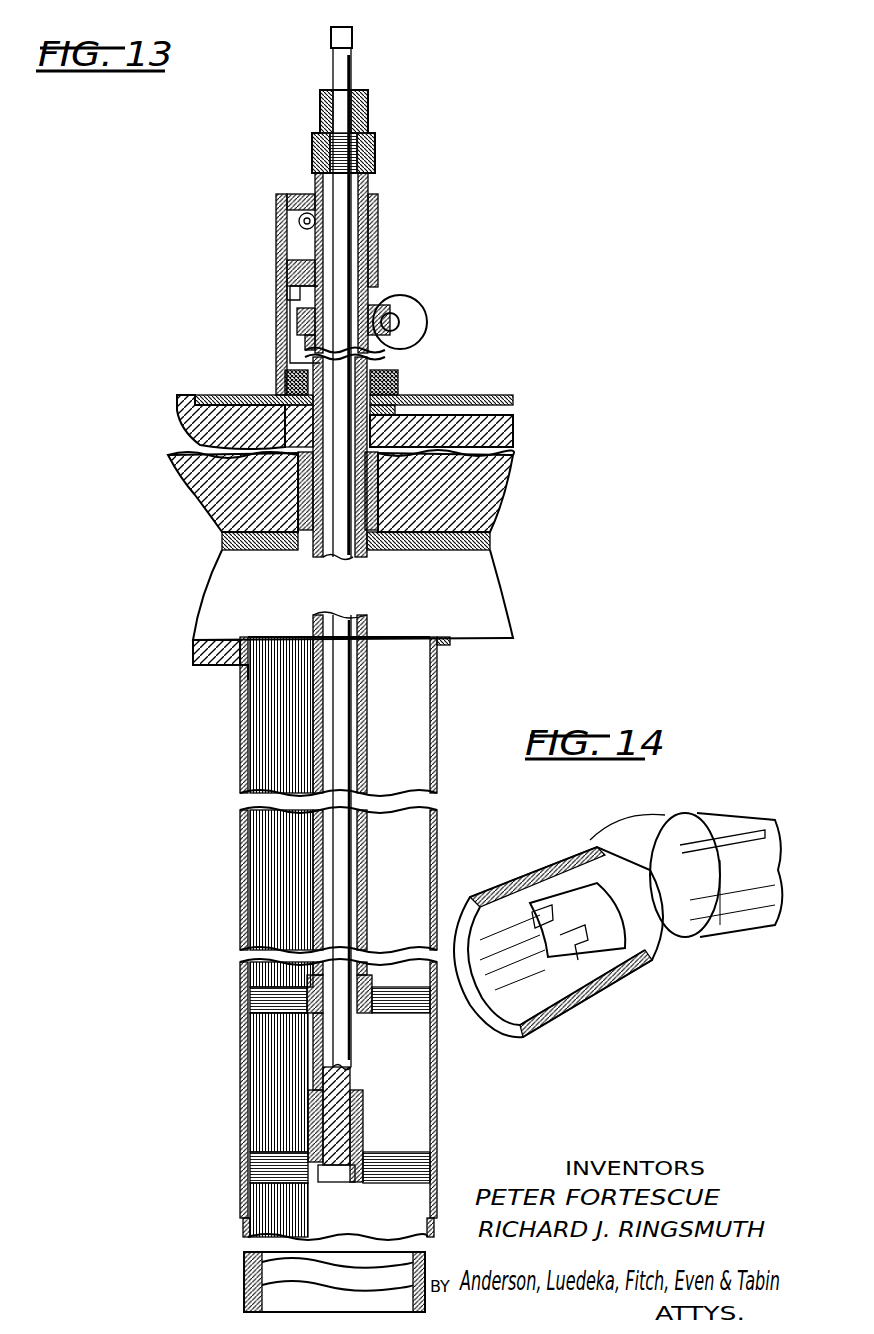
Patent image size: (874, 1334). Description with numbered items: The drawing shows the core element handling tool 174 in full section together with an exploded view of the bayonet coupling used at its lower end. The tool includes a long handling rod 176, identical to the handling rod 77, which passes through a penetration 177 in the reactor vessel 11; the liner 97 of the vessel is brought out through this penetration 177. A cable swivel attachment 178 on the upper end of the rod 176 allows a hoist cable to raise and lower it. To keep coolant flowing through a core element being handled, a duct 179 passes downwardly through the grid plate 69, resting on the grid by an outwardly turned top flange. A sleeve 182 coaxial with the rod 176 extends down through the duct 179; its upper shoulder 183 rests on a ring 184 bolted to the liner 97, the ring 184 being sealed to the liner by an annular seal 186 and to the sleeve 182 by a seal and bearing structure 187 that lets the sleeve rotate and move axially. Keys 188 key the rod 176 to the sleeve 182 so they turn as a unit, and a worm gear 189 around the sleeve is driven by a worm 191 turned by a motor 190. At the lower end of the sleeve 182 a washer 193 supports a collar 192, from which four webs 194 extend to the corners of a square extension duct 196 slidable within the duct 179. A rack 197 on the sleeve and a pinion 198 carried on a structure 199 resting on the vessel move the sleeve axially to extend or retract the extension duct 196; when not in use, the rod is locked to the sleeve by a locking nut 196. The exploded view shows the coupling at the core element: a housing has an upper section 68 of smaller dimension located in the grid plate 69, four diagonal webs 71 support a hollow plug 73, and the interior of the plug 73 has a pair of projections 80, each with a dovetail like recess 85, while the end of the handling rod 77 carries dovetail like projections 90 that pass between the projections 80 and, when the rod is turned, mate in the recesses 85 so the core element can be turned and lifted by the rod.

In FIG. 13, the reactor vessel 11 is at (180, 403).
In FIG. 13, the upper section 68 is at (437, 1225).
In FIG. 13, the grid plate 69 is at (222, 642).
In FIG. 13, the diagonal webs 71 is at (368, 1182).
In FIG. 13, the plug 73 is at (363, 1137).
In FIG. 14, the plug 73 is at (530, 877).
In FIG. 13, the handling rod 77 is at (357, 1097).
In FIG. 14, the handling rod 77 is at (762, 852).
In FIG. 13, the projections 80 is at (338, 1085).
In FIG. 14, the projections 80 is at (600, 920).
In FIG. 14, the recess 85 is at (558, 895).
In FIG. 13, the dovetail like projections 90 is at (336, 1174).
In FIG. 14, the dovetail like projections 90 is at (722, 838).
In FIG. 13, the liner 97 is at (212, 395).
In FIG. 13, the handling tool 174 is at (162, 492).
In FIG. 13, the handling rod 176 is at (336, 552).
In FIG. 13, the penetration 177 is at (285, 432).
In FIG. 13, the cable swivel attachment 178 is at (352, 41).
In FIG. 13, the duct 179 is at (252, 716).
In FIG. 13, the sleeve 182 is at (420, 405).
In FIG. 13, the shoulder 183 is at (385, 352).
In FIG. 13, the ring 184 is at (285, 384).
In FIG. 13, the annular seal 186 is at (398, 385).
In FIG. 13, the annular seal and bearing structure 187 is at (285, 352).
In FIG. 13, the keys 188 is at (323, 237).
In FIG. 13, the worm gear 189 is at (392, 300).
In FIG. 13, the motor 190 is at (418, 328).
In FIG. 13, the worm 191 is at (398, 322).
In FIG. 13, the collar 192 is at (383, 998).
In FIG. 13, the washer 193 is at (292, 998).
In FIG. 13, the webs 194 is at (357, 1020).
In FIG. 13, the extension duct 196 is at (376, 152).
In FIG. 13, the rack 197 is at (315, 238).
In FIG. 13, the pinion 198 is at (298, 221).
In FIG. 13, the structure 199 is at (276, 270).